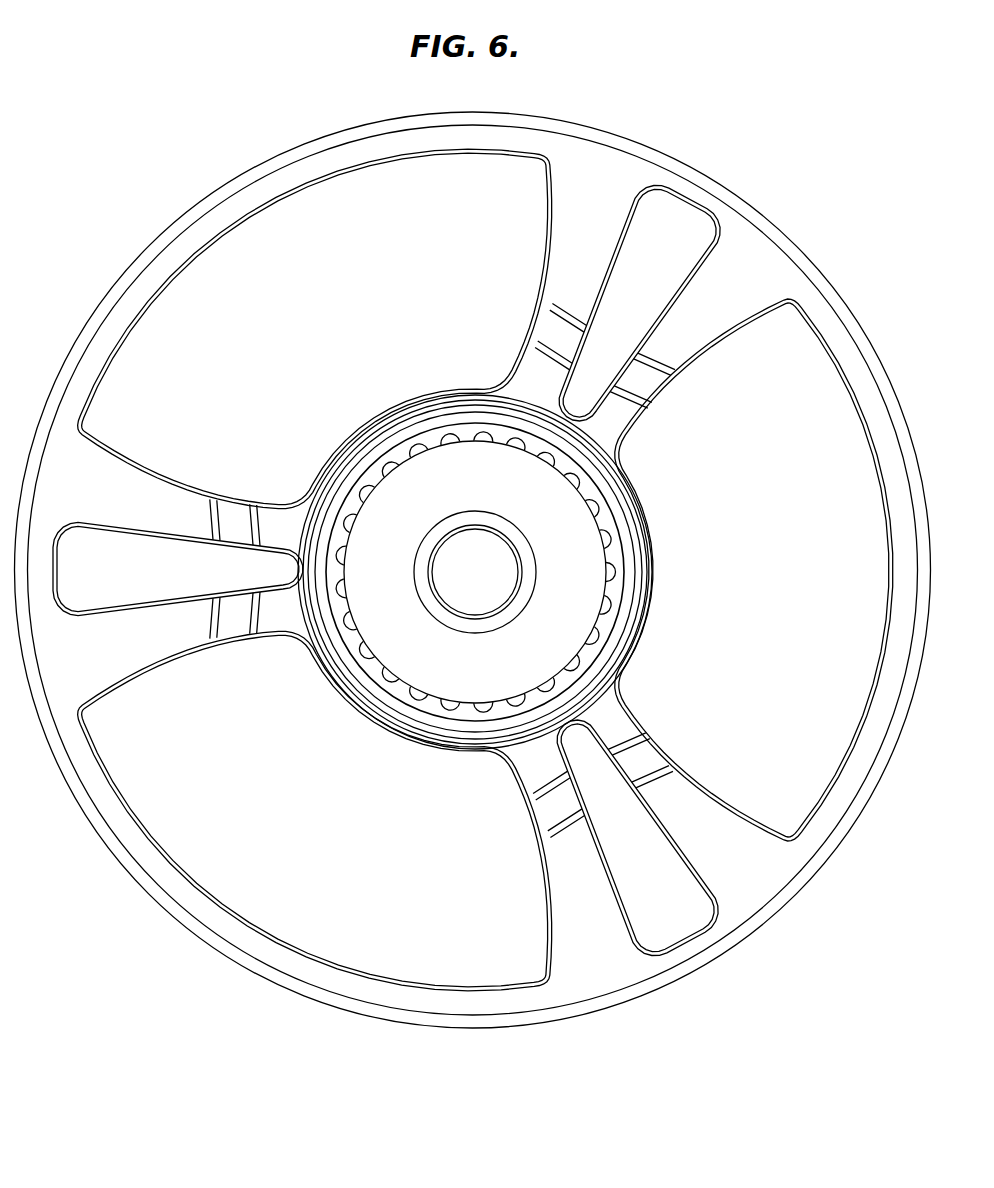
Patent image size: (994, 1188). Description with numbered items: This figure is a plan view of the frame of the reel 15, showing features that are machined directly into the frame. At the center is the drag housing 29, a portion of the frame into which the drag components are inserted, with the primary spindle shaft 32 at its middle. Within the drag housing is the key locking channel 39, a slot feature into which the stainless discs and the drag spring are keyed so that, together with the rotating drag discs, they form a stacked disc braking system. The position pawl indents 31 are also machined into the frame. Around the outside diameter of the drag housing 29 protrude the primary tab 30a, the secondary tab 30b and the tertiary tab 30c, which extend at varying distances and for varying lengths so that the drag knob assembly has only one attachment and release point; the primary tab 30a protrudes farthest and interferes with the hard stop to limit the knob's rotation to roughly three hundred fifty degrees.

The frame of the reel 15 is at (165, 263).
The drag housing 29 is at (425, 490).
The primary tab 30a is at (318, 576).
The secondary tab 30b is at (557, 705).
The tertiary tab 30c is at (535, 433).
The position pawl indents 31 is at (440, 697).
The primary spindle shaft 32 is at (478, 574).
The key locking channel 39 is at (348, 545).